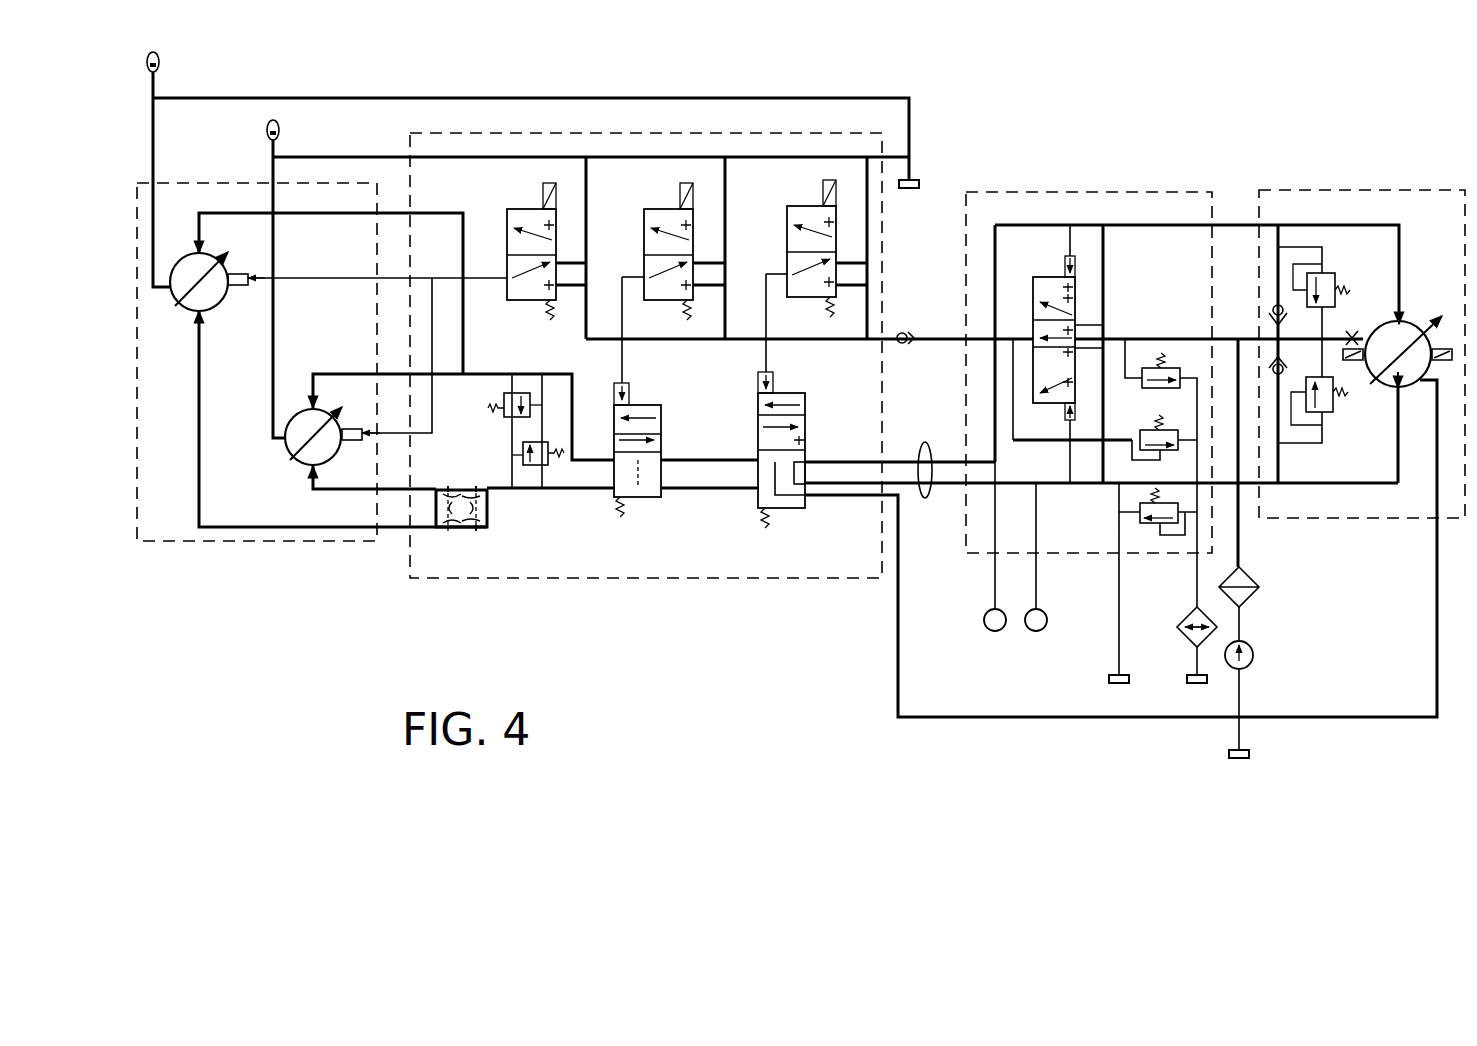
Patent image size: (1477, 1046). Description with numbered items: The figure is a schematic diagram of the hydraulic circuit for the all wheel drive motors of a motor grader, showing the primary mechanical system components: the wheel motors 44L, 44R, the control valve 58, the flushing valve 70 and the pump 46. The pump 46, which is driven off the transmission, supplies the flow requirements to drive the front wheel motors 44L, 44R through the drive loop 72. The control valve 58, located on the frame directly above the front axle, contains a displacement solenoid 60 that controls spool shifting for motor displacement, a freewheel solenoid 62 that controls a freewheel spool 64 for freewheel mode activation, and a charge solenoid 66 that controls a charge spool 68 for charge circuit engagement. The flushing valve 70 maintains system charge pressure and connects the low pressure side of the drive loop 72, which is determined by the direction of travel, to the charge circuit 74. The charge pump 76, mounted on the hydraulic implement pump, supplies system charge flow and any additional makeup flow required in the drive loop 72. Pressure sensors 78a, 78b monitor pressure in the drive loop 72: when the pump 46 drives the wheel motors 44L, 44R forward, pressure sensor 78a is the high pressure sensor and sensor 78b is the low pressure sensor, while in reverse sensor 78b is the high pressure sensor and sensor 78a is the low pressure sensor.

The wheel motor 44R is at (182, 307).
The wheel motor 44L is at (300, 462).
The pump 46 is at (1372, 192).
The control valve 58 is at (778, 575).
The displacement solenoid 60 is at (526, 209).
The freewheel solenoid 62 is at (664, 209).
The freewheel spool 64 is at (650, 497).
The charge solenoid 66 is at (804, 206).
The charge spool 68 is at (795, 508).
The flushing valve 70 is at (1117, 192).
The drive loop 72 is at (930, 440).
The charge circuit 74 is at (1270, 579).
The charge pump 76 is at (1255, 660).
The pressure sensor 78a is at (985, 629).
The pressure sensor 78b is at (1037, 631).